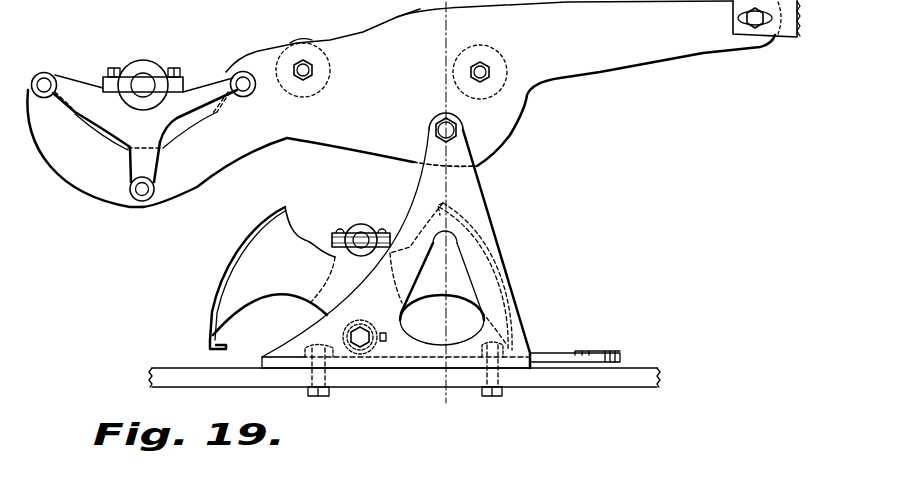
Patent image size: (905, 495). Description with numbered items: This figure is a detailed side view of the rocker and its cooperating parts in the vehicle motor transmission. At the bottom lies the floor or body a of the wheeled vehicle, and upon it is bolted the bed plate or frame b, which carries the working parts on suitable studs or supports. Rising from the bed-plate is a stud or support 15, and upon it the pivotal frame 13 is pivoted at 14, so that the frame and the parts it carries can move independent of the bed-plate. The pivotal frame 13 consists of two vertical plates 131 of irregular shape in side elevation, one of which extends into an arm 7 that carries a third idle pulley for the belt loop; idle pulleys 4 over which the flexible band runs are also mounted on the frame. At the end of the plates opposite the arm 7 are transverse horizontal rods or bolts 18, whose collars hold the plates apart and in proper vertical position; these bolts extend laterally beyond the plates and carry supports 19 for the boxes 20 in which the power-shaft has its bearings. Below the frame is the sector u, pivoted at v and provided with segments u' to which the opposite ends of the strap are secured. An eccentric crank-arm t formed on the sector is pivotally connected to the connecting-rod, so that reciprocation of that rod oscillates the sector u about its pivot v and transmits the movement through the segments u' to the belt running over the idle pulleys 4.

The idle pulleys 4 is at (300, 41).
The arm 7 is at (471, 104).
The pivotal frame 13 is at (444, 119).
The pivot 14 is at (463, 128).
The studs or supports 15 is at (441, 254).
The transverse horizontal rods or bolts 18 is at (47, 78).
The supports 19 is at (132, 141).
The boxes 20 is at (145, 62).
The vertical plates 131 is at (404, 31).
The floor or body of the vehicle a is at (400, 389).
The bed plate or frame b is at (338, 359).
The eccentric crank-arm t is at (361, 240).
The sector u is at (263, 278).
The segments u' is at (483, 276).
The pivot v is at (366, 328).